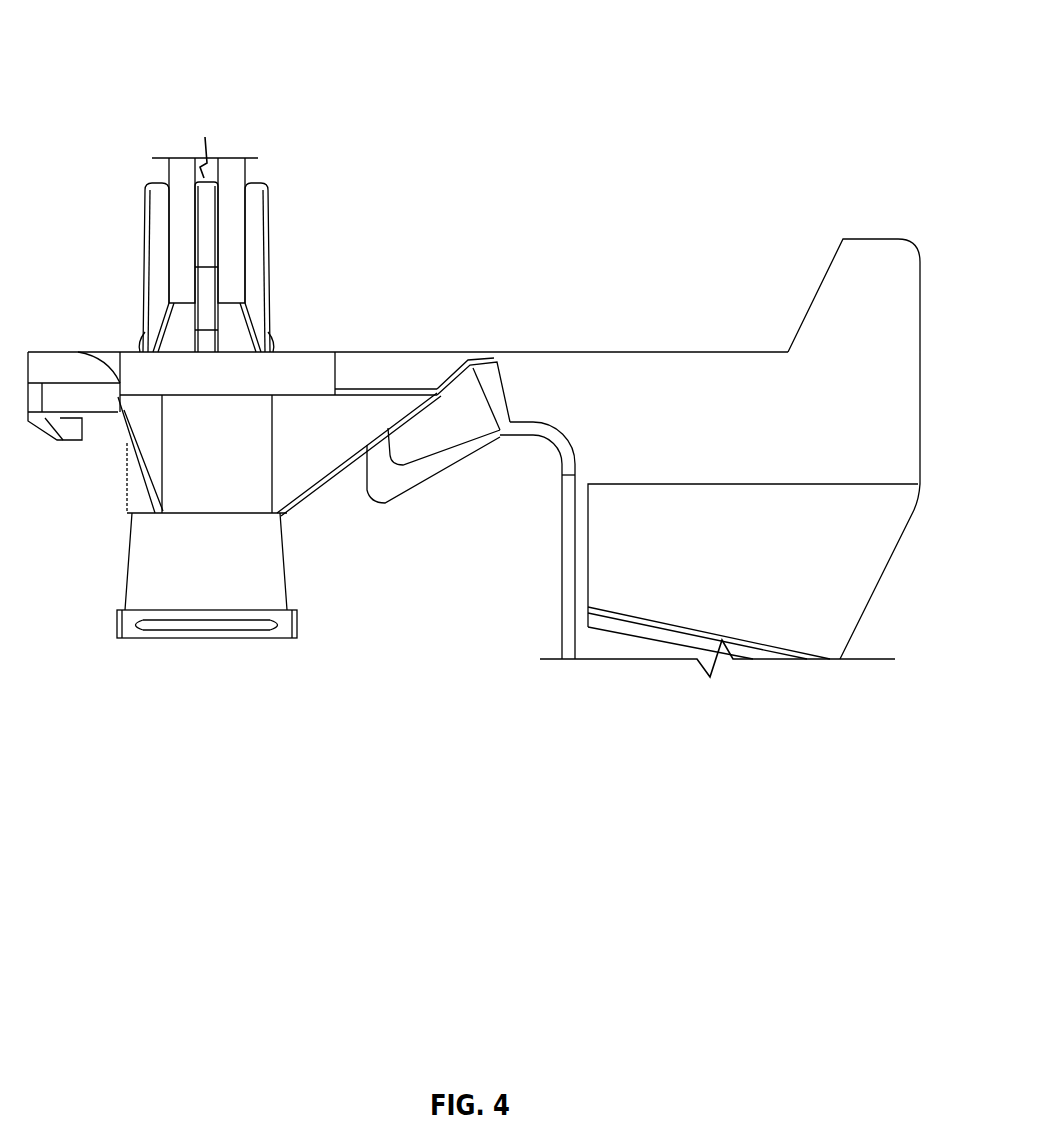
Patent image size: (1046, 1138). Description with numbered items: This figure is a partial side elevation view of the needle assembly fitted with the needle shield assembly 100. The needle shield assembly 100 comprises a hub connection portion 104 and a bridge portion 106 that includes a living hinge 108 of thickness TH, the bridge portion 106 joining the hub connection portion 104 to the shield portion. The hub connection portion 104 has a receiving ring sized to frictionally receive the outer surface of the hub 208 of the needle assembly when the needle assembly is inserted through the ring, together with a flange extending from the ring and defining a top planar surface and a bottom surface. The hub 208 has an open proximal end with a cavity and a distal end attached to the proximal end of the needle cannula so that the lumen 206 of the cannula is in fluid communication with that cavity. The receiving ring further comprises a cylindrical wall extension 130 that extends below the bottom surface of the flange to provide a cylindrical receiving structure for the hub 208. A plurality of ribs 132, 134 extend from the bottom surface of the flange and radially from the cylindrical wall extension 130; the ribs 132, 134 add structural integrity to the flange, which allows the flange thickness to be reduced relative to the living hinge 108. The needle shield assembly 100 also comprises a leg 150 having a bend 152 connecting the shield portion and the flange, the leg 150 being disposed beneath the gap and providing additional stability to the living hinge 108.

The needle shield assembly 100 is at (118, 55).
The hub connection portion 104 is at (105, 311).
The bridge portion 106 is at (460, 323).
The living hinge 108 is at (478, 352).
The cylindrical wall extension 130 is at (198, 480).
The rib 132 is at (135, 442).
The rib 134 is at (293, 457).
The leg 150 is at (437, 460).
The bend 152 is at (388, 502).
The lumen 206 is at (217, 231).
The hub 208 is at (268, 220).